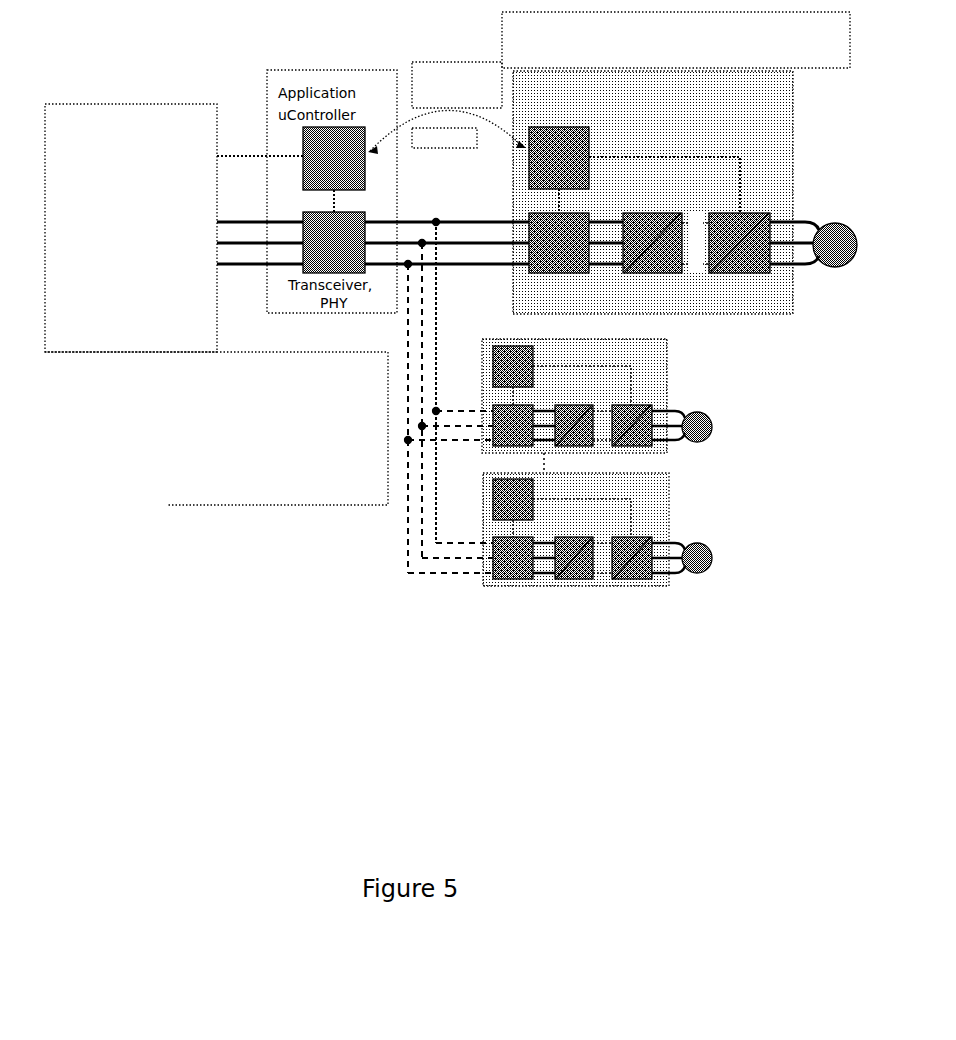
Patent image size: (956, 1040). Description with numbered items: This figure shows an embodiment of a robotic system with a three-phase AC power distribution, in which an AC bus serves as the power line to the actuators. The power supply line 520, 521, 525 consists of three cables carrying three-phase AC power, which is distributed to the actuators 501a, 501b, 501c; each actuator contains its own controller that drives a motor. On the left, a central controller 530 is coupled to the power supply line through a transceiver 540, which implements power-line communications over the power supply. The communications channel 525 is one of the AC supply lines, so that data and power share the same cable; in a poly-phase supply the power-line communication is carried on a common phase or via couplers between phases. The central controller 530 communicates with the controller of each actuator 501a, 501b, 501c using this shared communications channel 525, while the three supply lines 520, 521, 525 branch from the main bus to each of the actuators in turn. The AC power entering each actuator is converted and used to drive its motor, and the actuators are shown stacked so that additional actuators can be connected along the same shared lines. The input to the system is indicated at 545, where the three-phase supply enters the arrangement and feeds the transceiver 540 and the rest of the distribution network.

The actuator 501a is at (713, 55).
The actuator 501b is at (724, 380).
The actuator 501c is at (723, 540).
The power supply line 520 is at (407, 470).
The power supply line 521 is at (420, 492).
The communications channel 525 is at (438, 505).
The central controller 530 is at (367, 122).
The transceiver 540 is at (298, 270).
The power input 545 is at (193, 232).